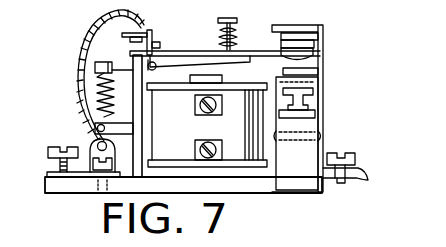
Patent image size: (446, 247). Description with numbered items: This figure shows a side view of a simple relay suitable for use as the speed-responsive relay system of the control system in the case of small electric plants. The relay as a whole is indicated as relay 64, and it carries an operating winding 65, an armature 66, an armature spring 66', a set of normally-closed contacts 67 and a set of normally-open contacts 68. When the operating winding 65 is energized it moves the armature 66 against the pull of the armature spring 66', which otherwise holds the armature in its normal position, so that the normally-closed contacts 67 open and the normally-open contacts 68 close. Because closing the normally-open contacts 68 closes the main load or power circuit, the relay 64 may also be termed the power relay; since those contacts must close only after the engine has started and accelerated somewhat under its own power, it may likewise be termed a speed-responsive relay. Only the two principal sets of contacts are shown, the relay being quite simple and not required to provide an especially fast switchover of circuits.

The relay 64 is at (342, 100).
The operating winding 65 is at (235, 152).
The armature 66 is at (225, 36).
The armature spring 66' is at (84, 98).
The normally-closed contacts 67 is at (312, 53).
The normally-open contacts 68 is at (313, 72).